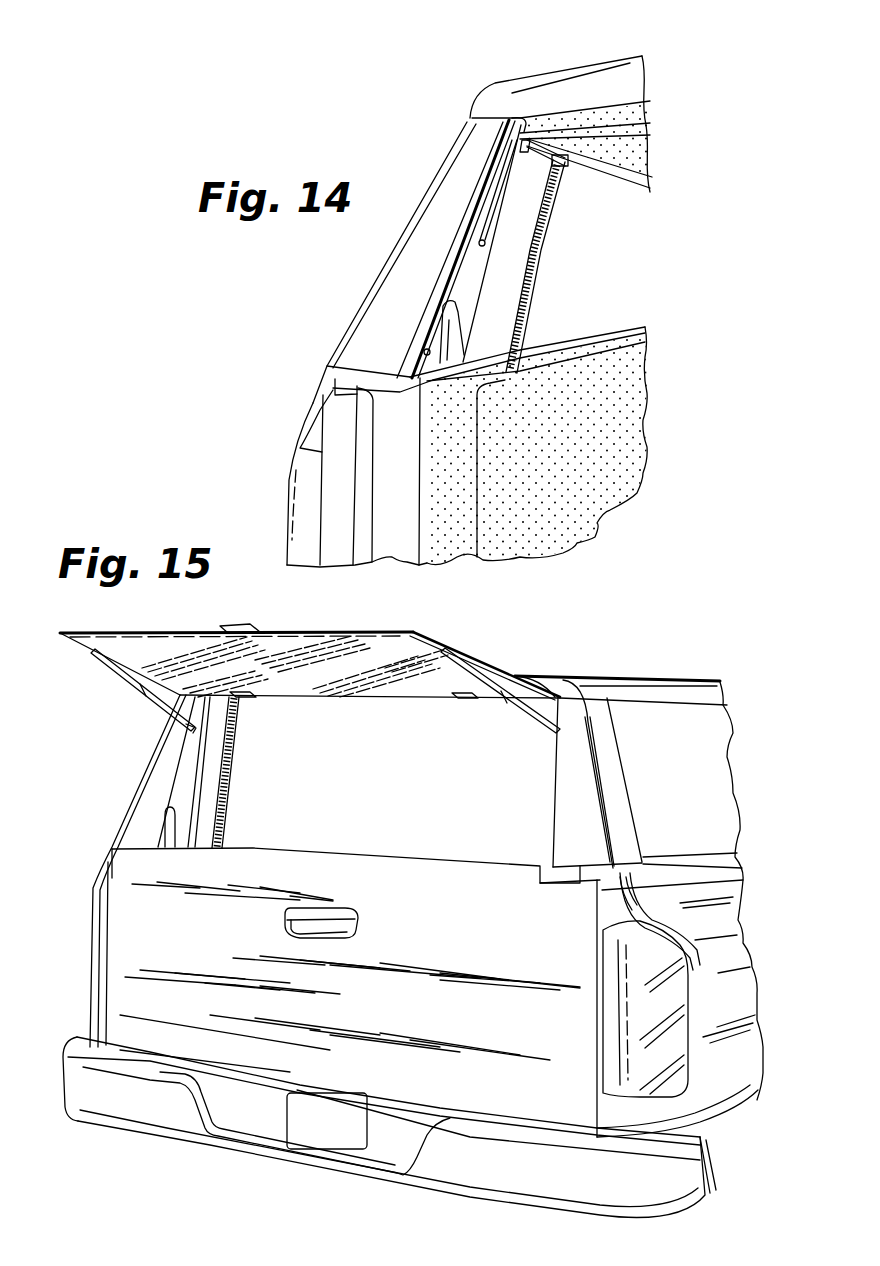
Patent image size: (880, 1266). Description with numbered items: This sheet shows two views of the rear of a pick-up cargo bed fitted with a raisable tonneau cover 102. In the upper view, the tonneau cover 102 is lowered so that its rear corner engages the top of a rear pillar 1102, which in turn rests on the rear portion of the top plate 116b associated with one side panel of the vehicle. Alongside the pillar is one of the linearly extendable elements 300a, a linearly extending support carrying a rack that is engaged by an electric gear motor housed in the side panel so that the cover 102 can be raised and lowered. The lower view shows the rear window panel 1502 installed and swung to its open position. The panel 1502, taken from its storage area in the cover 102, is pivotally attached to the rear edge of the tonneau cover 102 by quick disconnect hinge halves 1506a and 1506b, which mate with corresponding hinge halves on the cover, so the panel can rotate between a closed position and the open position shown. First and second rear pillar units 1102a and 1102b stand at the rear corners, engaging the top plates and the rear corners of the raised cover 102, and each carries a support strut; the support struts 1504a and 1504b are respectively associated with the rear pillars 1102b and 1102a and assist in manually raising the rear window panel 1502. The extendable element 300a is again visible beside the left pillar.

In FIG. 14, the tonneau cover 102 is at (611, 57).
In FIG. 15, the tonneau cover 102 is at (609, 675).
In FIG. 14, the rear pillar 1102 is at (467, 147).
In FIG. 14, the linearly extendable element 300a is at (560, 243).
In FIG. 15, the linearly extendable element 300a is at (240, 810).
In FIG. 14, the top plate 116b is at (617, 326).
In FIG. 15, the rear window panel 1502 is at (309, 633).
In FIG. 15, the support strut 1504a is at (150, 692).
In FIG. 15, the support strut 1504b is at (545, 728).
In FIG. 15, the quick disconnect hinge half 1506a is at (247, 700).
In FIG. 15, the quick disconnect hinge half 1506b is at (468, 700).
In FIG. 15, the first rear pillar unit 1102a is at (582, 778).
In FIG. 15, the second rear pillar unit 1102b is at (148, 745).